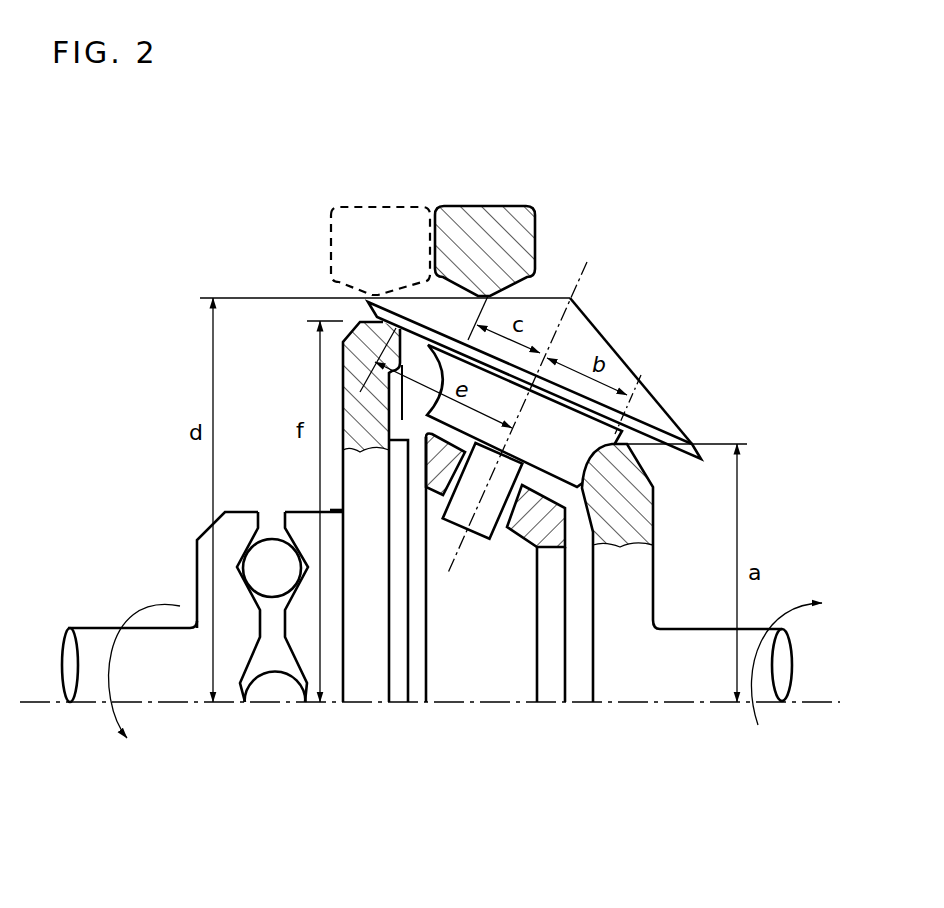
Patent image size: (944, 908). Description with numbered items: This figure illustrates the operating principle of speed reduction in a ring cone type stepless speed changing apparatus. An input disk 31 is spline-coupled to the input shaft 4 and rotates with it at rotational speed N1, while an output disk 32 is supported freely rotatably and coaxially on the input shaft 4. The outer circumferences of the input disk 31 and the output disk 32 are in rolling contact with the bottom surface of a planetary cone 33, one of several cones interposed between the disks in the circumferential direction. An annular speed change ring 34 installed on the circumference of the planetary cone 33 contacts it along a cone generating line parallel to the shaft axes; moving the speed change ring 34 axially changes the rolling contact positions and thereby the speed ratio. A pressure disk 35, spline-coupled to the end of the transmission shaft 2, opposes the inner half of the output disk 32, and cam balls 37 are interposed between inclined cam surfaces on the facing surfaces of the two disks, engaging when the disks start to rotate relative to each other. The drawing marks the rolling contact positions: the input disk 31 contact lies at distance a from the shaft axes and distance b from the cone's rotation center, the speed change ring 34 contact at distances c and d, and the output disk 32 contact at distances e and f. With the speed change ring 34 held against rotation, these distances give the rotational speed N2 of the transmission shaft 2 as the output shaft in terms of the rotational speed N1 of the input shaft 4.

The transmission shaft 2 is at (170, 695).
The input shaft 4 is at (688, 695).
The input disk 31 is at (617, 695).
The output disk 32 is at (370, 695).
The planetary cone 33 is at (596, 332).
The speed change ring 34 is at (380, 202).
The pressure disk 35 is at (203, 568).
The cam balls 37 is at (273, 550).
The rotational speed of the input shaft N1 is at (786, 690).
The rotational speed of the transmission shaft N2 is at (144, 691).